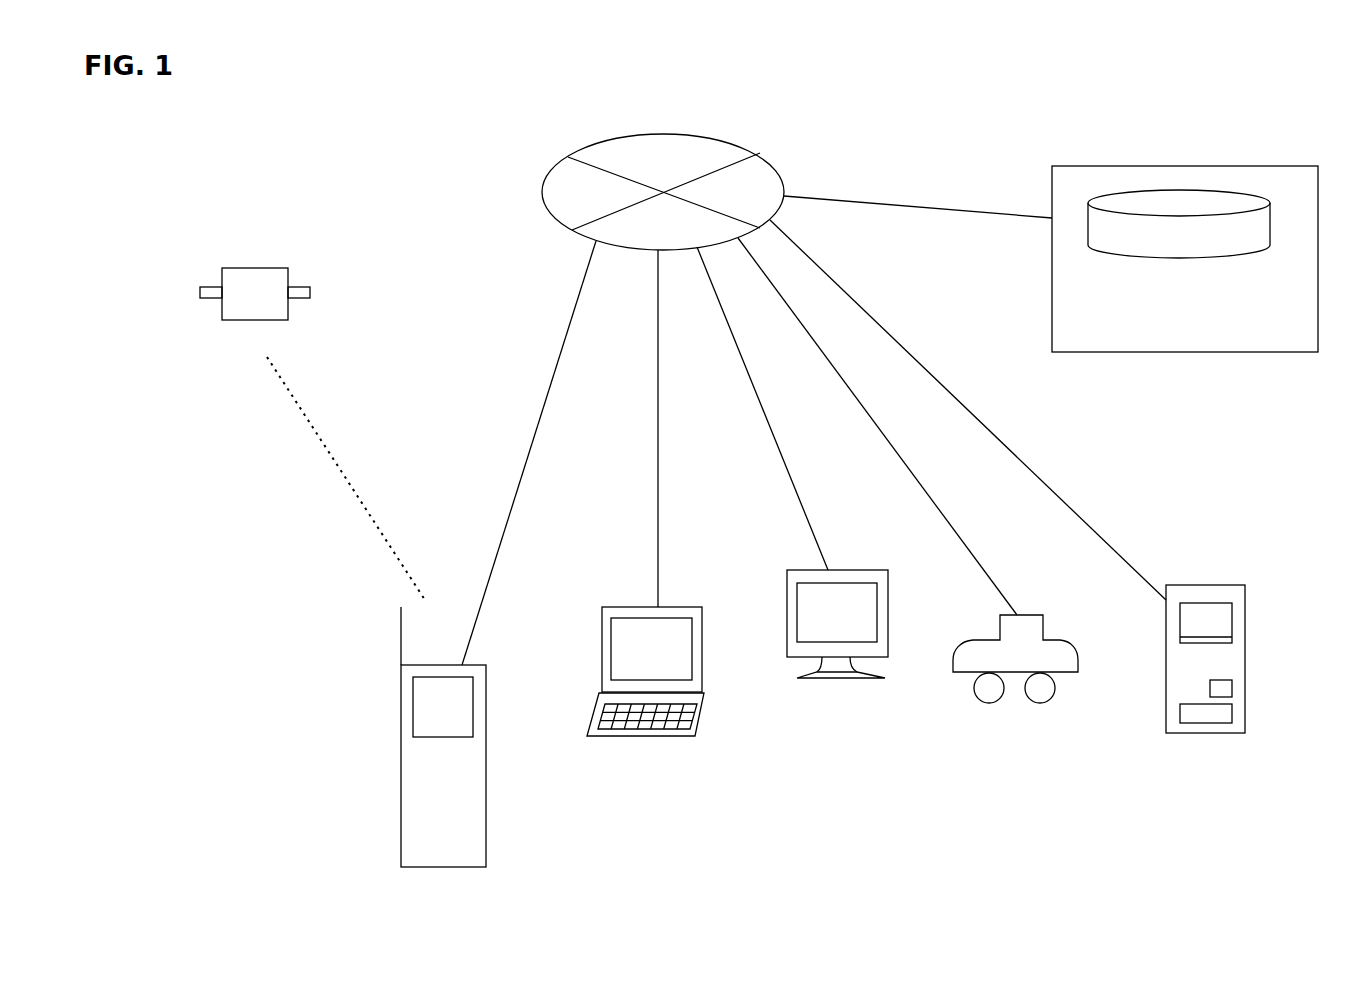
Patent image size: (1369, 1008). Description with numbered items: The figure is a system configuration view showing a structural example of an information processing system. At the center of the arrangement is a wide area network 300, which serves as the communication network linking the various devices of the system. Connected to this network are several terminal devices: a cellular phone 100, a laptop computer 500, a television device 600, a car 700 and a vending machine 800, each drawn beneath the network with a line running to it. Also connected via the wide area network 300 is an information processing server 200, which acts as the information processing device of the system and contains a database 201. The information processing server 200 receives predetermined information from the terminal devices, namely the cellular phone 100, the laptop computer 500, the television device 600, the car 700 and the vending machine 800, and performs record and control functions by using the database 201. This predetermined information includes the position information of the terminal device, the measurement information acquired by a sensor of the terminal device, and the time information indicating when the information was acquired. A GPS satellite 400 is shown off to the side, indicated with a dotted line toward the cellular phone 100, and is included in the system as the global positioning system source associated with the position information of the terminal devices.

The cellular phone 100 is at (486, 765).
The information processing server 200 is at (1210, 167).
The database 201 is at (1178, 263).
The wide area network 300 is at (777, 167).
The GPS satellite 400 is at (289, 278).
The laptop computer 500 is at (702, 650).
The television device 600 is at (850, 678).
The car 700 is at (1065, 672).
The vending machine 800 is at (1193, 733).